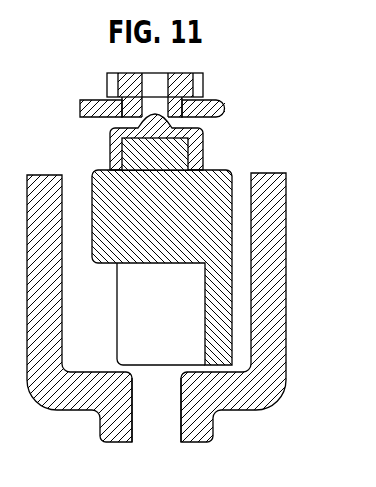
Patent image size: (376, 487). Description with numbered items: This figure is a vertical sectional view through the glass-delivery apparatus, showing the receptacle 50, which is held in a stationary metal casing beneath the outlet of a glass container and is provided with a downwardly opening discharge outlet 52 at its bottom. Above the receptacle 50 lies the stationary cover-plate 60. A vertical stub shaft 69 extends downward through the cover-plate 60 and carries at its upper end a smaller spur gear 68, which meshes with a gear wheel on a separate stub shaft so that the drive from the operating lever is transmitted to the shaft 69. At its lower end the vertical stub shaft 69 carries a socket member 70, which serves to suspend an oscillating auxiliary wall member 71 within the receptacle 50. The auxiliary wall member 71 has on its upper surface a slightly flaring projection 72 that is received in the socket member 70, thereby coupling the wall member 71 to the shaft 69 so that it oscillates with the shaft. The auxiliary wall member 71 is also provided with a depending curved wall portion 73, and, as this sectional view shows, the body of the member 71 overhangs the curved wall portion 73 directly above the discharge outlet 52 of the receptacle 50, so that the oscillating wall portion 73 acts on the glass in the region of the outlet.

The receptacle 50 is at (272, 350).
The discharge outlet 52 is at (157, 428).
The cover-plate 60 is at (220, 107).
The spur gear 68 is at (122, 80).
The vertical stub shaft 69 is at (152, 84).
The socket member 70 is at (116, 153).
The oscillating auxiliary wall member 71 is at (223, 212).
The flaring projection 72 is at (172, 157).
The depending curved wall portion 73 is at (218, 302).